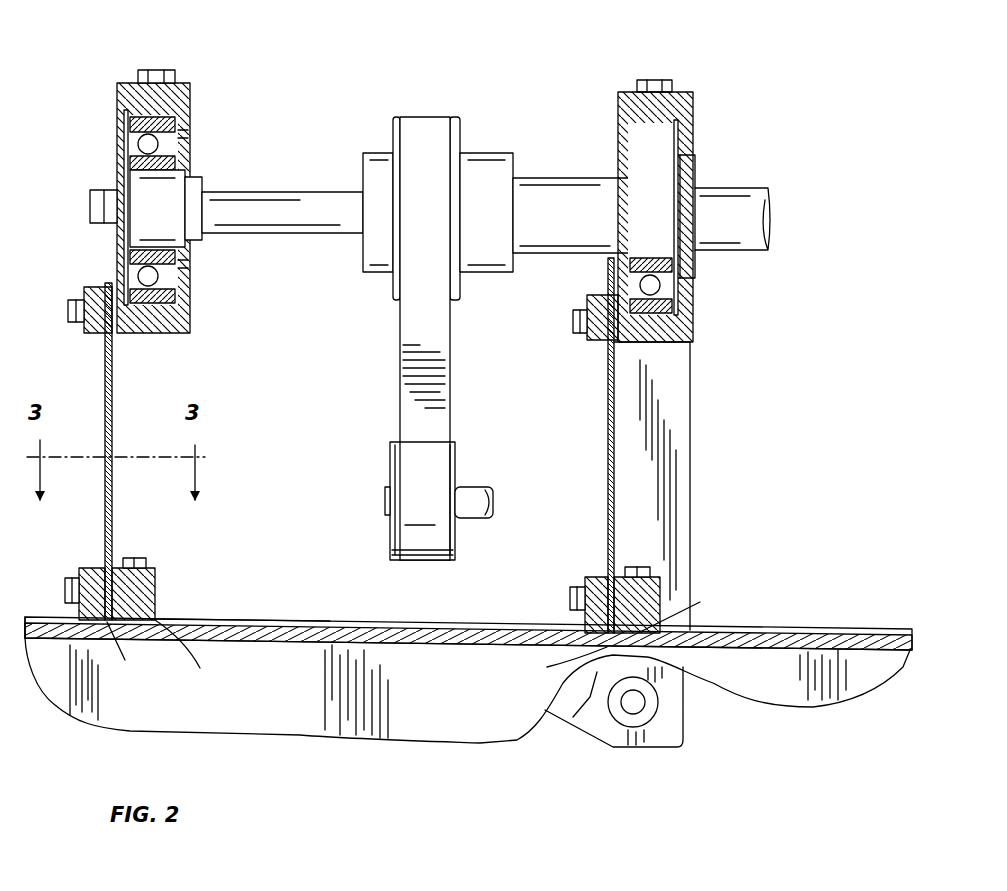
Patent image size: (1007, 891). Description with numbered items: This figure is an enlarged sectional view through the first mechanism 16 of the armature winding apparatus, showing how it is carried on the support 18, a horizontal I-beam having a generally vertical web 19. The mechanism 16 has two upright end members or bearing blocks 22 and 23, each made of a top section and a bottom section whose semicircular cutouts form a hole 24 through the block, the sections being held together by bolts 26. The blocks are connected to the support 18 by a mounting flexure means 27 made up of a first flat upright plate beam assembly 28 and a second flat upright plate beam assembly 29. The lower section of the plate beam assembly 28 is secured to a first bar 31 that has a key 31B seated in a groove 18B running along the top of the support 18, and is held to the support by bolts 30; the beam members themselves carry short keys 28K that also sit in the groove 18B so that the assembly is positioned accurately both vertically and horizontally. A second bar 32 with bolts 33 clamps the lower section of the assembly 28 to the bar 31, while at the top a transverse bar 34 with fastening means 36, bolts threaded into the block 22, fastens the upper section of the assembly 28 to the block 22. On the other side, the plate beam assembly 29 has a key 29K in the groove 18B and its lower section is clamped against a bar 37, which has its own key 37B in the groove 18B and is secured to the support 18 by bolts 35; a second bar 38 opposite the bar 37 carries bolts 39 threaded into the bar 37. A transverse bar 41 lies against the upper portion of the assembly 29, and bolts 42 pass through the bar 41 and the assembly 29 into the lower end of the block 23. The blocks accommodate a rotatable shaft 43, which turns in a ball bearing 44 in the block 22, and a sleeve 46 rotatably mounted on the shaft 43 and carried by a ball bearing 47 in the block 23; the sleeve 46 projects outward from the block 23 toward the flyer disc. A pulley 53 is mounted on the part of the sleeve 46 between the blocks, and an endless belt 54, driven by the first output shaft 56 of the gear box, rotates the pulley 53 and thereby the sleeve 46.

The first mechanism 16 is at (713, 98).
The support 18 is at (790, 635).
The groove 18B is at (205, 622).
The web 19 is at (118, 697).
The block 22 is at (117, 90).
The block 23 is at (695, 116).
The hole 24 is at (180, 155).
The bolts 26 is at (160, 70).
The mounting flexure means 27 is at (713, 450).
The first flat upright plate beam assembly 28 is at (105, 365).
The keys 28K is at (124, 655).
The second flat upright plate beam assembly 29 is at (608, 470).
The key 29K is at (557, 662).
The bolts 30 is at (132, 558).
The first bar 31 is at (152, 588).
The key 31B is at (189, 659).
The second bar 32 is at (93, 575).
The bolts 33 is at (65, 590).
The transverse bar 34 is at (97, 285).
The bolts 35 is at (643, 570).
The fastening means 36 is at (68, 310).
The bar 37 is at (640, 595).
The key 37B is at (699, 610).
The second bar 38 is at (590, 577).
The bolts 39 is at (570, 595).
The transverse bar 41 is at (590, 342).
The bolts 42 is at (573, 318).
The shaft 43 is at (300, 192).
The ball bearing 44 is at (128, 145).
The sleeve 46 is at (570, 190).
The ball bearing 47 is at (630, 283).
The pulley 53 is at (393, 288).
The endless belt 54 is at (435, 423).
The first output shaft 56 is at (478, 490).